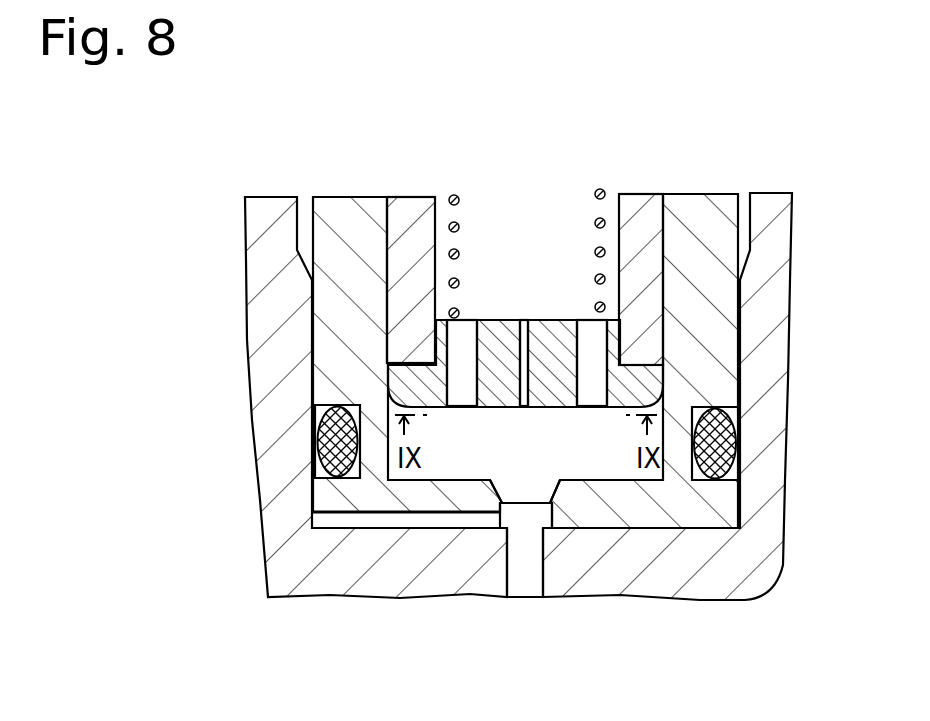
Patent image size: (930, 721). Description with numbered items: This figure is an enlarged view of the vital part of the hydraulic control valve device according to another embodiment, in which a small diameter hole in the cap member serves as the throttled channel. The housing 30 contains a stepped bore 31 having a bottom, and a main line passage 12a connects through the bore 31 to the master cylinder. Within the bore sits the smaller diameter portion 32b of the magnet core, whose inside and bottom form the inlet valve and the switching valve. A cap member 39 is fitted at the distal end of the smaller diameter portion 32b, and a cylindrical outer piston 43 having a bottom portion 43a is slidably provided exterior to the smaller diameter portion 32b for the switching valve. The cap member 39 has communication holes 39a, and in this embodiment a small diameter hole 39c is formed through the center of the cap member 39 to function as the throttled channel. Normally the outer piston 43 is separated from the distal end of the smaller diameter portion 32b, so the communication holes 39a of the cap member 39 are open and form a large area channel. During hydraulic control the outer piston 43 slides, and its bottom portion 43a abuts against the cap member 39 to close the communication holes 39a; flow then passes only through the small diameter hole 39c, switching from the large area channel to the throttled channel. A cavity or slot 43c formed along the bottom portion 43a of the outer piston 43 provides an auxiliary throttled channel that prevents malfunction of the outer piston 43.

The housing 30 is at (767, 382).
The stepped bore 31 is at (320, 398).
The smaller diameter portion 32b is at (420, 205).
The cap member 39 is at (503, 323).
The communication holes 39a is at (463, 400).
The small diameter hole 39c is at (525, 320).
The outer piston 43 is at (330, 297).
The bottom portion 43a is at (472, 495).
The slot 43c is at (357, 522).
The main line passage 12a is at (530, 575).